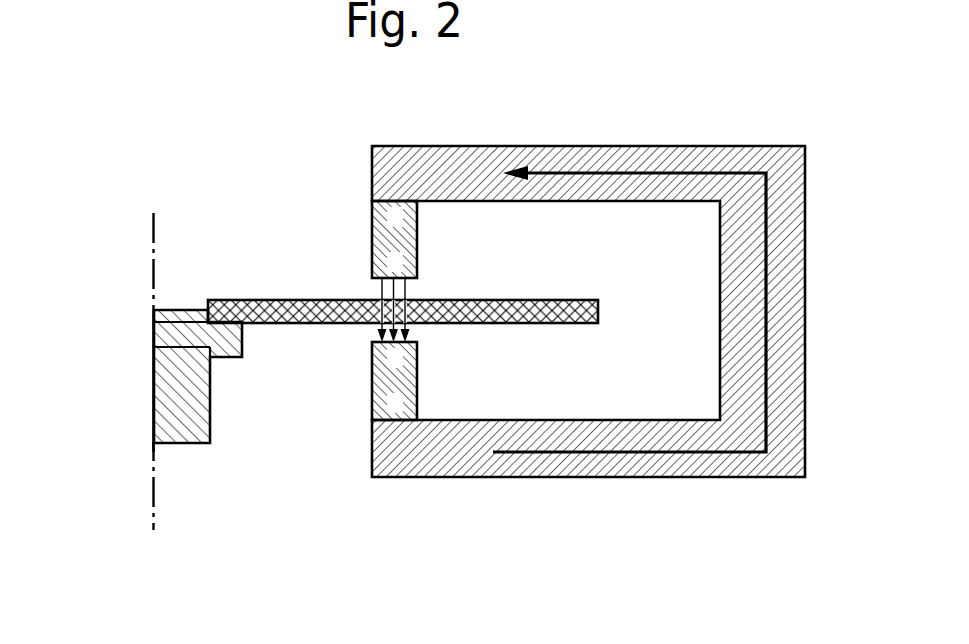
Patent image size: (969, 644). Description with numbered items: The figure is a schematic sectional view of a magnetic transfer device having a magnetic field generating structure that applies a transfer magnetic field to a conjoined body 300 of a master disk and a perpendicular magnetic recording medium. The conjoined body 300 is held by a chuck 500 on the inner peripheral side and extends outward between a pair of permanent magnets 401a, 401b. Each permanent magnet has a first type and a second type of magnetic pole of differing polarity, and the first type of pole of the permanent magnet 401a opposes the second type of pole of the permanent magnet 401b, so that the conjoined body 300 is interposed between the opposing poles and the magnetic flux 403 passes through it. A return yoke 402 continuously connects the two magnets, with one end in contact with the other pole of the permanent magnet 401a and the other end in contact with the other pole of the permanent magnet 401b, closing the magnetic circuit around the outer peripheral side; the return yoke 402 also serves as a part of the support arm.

The conjoined body 300 is at (222, 298).
The permanent magnet 401a is at (372, 212).
The permanent magnet 401b is at (370, 401).
The return yoke 402 is at (475, 477).
The magnetic flux 403 is at (380, 290).
The chuck 500 is at (153, 400).